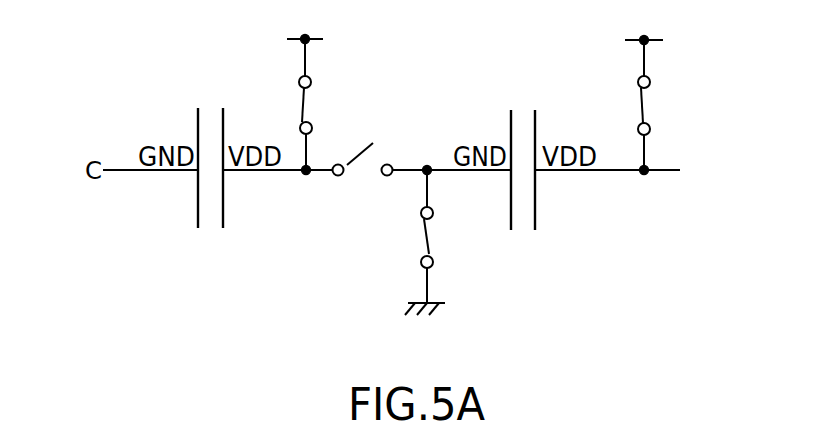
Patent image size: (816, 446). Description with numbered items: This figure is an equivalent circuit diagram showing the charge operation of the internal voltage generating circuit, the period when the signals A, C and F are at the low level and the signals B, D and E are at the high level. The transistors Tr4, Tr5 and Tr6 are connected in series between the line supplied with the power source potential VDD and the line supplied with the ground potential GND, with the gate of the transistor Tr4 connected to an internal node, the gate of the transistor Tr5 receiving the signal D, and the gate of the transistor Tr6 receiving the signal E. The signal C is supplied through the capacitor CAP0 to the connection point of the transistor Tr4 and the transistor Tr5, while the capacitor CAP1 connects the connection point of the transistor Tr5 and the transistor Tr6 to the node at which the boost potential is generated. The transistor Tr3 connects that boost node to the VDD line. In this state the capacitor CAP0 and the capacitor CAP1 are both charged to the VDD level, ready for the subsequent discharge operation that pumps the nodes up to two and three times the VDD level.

The capacitor CAP0 is at (212, 229).
The capacitor CAP1 is at (522, 231).
The transistor Tr3 is at (643, 107).
The transistor Tr4 is at (305, 107).
The transistor Tr5 is at (367, 173).
The transistor Tr6 is at (422, 240).